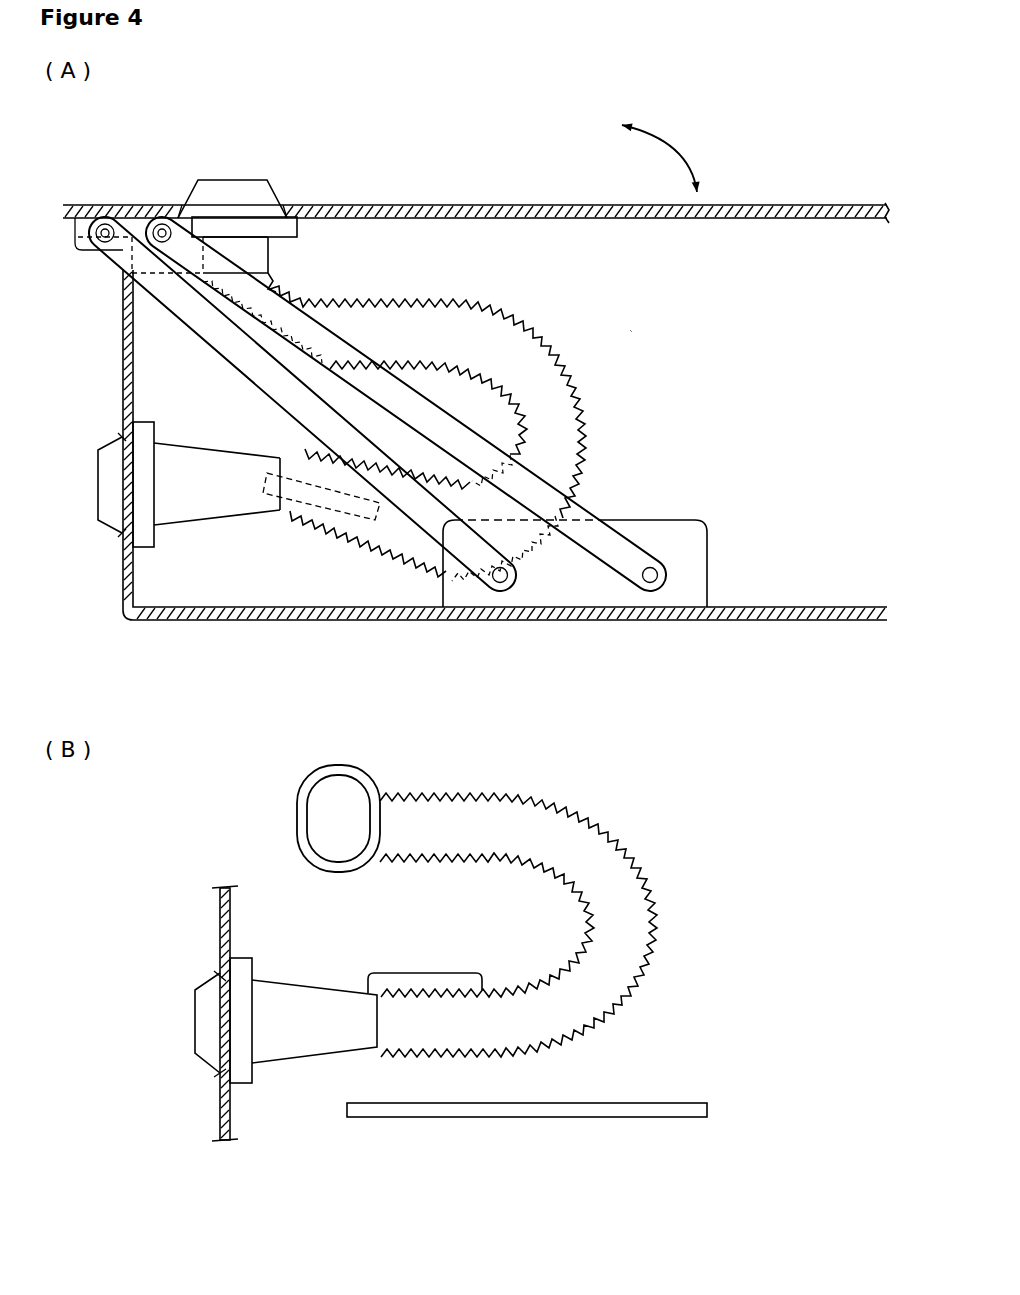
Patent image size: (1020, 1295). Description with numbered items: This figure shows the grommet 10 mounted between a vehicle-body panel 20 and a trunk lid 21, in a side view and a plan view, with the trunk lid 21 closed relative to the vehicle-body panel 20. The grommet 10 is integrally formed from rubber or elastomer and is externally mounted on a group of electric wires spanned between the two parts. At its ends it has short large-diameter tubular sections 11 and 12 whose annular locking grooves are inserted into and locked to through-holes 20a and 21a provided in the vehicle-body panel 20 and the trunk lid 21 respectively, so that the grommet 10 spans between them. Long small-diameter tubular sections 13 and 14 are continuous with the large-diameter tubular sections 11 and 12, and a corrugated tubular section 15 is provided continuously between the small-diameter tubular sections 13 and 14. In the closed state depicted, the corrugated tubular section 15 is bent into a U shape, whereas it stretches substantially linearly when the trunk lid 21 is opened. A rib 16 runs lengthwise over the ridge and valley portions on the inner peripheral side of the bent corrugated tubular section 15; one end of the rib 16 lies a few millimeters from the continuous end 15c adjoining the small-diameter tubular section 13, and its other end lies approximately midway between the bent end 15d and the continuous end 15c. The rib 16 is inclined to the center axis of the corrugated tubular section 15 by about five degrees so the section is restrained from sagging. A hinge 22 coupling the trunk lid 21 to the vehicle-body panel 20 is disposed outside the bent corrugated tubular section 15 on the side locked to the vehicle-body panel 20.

The grommet 10 is at (585, 357).
The large-diameter tubular section 11 is at (100, 497).
The large-diameter tubular section 12 is at (222, 182).
The small-diameter tubular section 13 is at (192, 512).
The small-diameter tubular section 14 is at (268, 257).
The corrugated tubular section 15 is at (502, 340).
The continuous end 15c is at (280, 516).
The bent end 15d is at (588, 484).
The rib 16 is at (317, 513).
The vehicle-body panel 20 is at (122, 585).
The through-hole 20a is at (122, 437).
The trunk lid 21 is at (320, 205).
The through-hole 21a is at (282, 205).
The hinge 22 is at (537, 478).